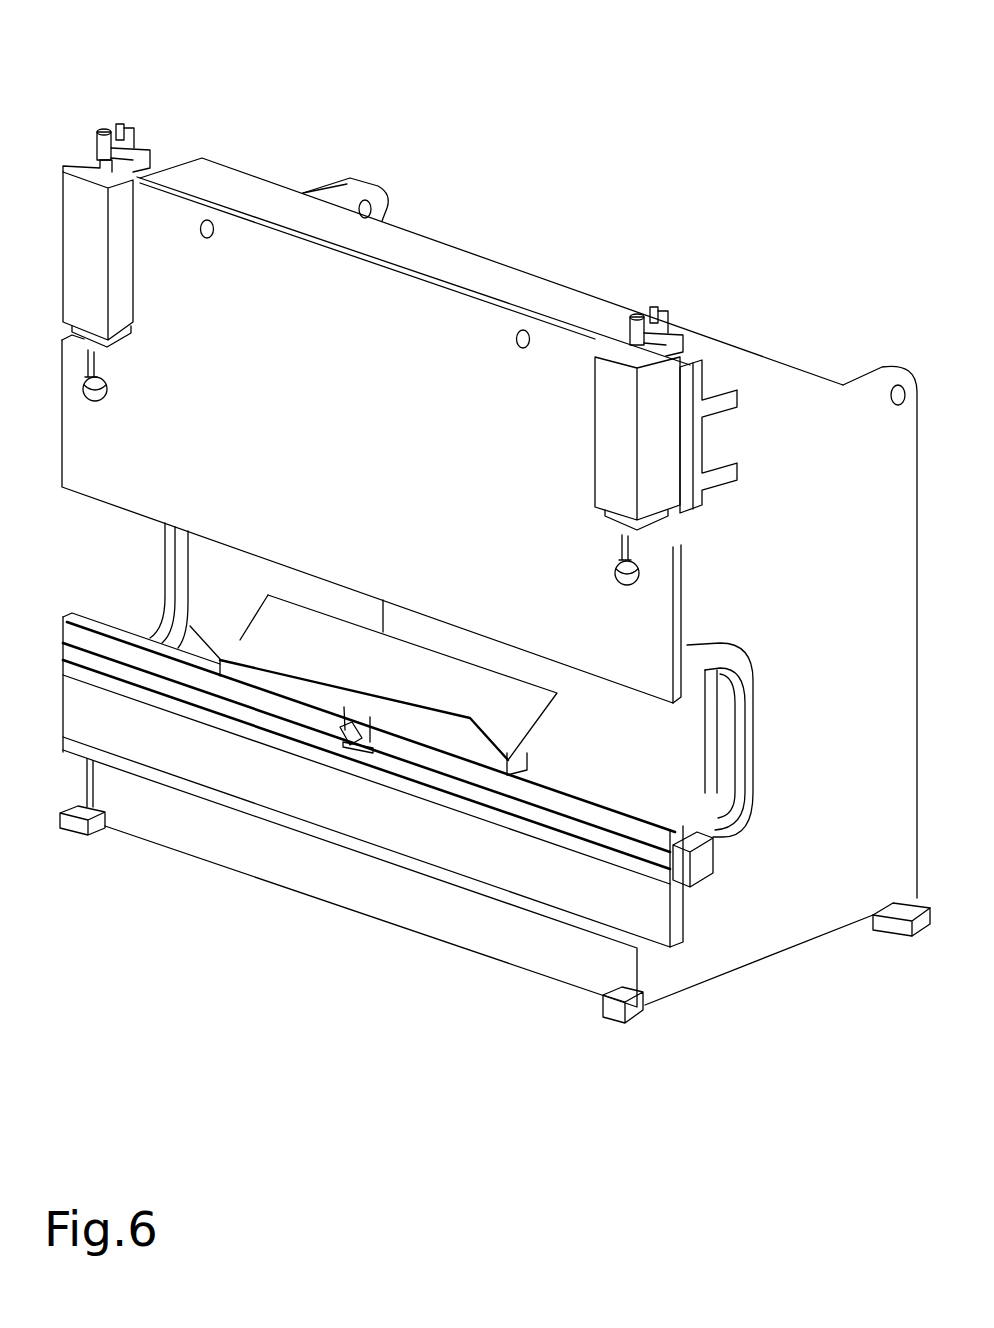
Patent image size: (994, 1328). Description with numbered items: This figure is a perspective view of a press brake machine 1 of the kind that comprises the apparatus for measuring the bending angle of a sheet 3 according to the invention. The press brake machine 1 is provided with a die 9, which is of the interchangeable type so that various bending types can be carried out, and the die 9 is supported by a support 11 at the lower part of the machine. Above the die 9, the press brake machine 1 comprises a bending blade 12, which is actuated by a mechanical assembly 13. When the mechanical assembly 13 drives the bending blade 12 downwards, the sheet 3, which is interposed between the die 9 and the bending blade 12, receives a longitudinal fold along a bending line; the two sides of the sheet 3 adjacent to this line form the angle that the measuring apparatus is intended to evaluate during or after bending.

The press brake machine 1 is at (106, 85).
The sheet 3 is at (527, 715).
The die 9 is at (527, 757).
The support 11 is at (64, 630).
The bending blade 12 is at (107, 462).
The mechanical assembly 13 is at (95, 280).